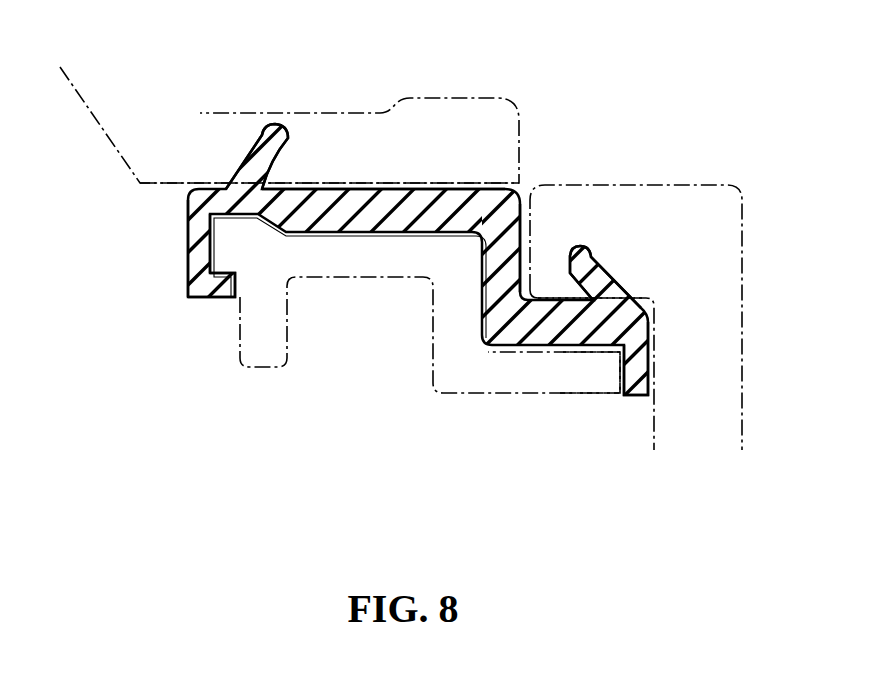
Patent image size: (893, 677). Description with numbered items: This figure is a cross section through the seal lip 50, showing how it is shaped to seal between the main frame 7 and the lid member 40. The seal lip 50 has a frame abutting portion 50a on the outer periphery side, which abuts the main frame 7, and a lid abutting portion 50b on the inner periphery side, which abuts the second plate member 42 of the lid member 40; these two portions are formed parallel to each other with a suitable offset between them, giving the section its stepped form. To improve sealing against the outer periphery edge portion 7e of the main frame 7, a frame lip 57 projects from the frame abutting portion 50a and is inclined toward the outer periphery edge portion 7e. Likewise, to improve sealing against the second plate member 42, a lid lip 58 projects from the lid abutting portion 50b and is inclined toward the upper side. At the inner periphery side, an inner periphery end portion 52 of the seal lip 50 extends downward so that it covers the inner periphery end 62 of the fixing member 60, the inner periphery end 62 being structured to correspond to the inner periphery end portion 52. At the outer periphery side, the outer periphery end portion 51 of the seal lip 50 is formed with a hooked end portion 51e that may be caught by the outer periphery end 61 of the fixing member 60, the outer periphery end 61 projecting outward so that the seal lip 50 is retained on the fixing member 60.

The main frame 7 is at (88, 159).
The outer periphery edge portion 7e is at (160, 203).
The lid member 40 is at (646, 168).
The second plate member 42 is at (562, 298).
The seal lip 50 is at (361, 172).
The frame abutting portion 50a is at (397, 198).
The lid abutting portion 50b is at (535, 308).
The outer periphery end portion 51 is at (197, 262).
The hooked end portion 51e is at (230, 297).
The inner periphery end portion 52 is at (640, 362).
The frame lip 57 is at (250, 177).
The lid lip 58 is at (588, 263).
The fixing member 60 is at (368, 298).
The outer periphery end 61 is at (215, 247).
The inner periphery end 62 is at (608, 368).